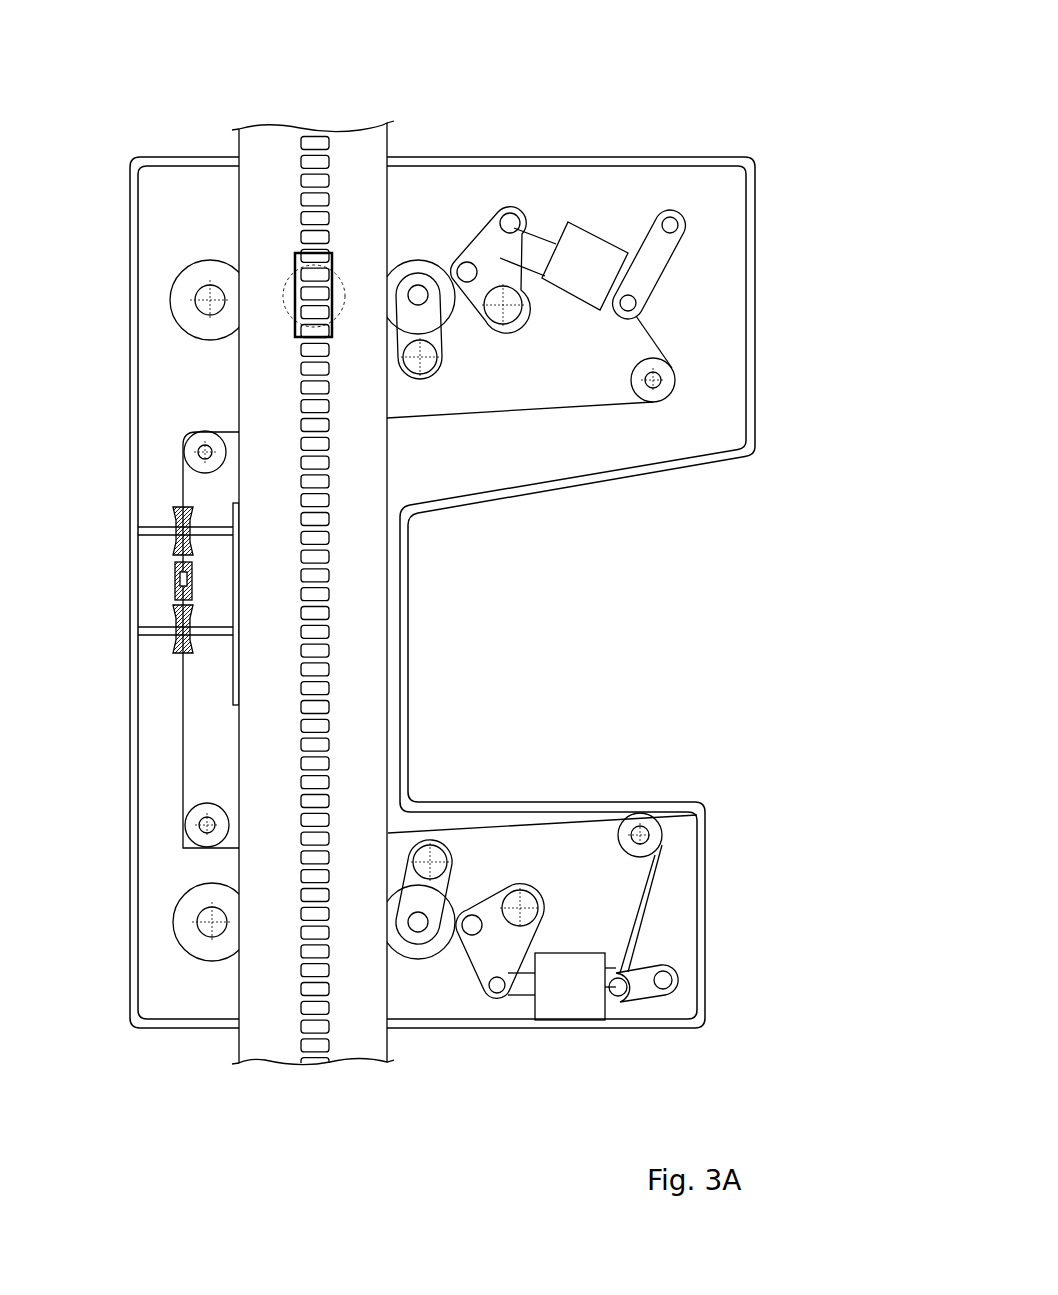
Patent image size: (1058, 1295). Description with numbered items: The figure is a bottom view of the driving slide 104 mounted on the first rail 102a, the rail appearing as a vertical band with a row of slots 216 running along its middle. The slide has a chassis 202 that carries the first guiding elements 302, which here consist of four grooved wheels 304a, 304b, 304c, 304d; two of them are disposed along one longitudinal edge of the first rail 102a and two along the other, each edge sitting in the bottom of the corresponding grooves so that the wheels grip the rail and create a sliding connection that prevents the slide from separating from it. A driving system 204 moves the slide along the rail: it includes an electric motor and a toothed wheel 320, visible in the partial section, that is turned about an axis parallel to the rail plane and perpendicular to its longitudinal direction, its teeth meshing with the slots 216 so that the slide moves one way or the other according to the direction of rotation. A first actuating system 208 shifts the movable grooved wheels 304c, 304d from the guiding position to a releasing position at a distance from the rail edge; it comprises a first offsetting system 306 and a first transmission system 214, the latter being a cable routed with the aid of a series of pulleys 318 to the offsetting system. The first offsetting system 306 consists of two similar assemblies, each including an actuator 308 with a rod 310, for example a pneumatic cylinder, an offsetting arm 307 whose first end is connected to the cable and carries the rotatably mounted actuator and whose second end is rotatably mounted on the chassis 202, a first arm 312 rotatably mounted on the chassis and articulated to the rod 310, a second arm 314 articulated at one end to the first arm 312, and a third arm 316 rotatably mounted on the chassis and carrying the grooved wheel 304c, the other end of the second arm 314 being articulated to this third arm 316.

The driving slide 104 is at (447, 592).
The first rail 102a is at (260, 1047).
The chassis 202 is at (752, 200).
The driving system 204 is at (400, 223).
The first actuating system 208 is at (584, 840).
The first transmission system 214 is at (183, 738).
The slots 216 is at (320, 1025).
The first guiding elements 302 is at (128, 145).
The grooved wheel 304a is at (173, 310).
The grooved wheel 304b is at (188, 933).
The grooved wheel 304c is at (420, 960).
The grooved wheel 304d is at (412, 272).
The first offsetting system 306 is at (584, 870).
The offsetting arm 307 is at (640, 972).
The actuator 308 is at (582, 1006).
The rod 310 is at (522, 996).
The first arm 312 is at (522, 884).
The second arm 314 is at (455, 915).
The third arm 316 is at (420, 842).
The pulleys 318 is at (187, 830).
The toothed wheel 320 is at (297, 268).